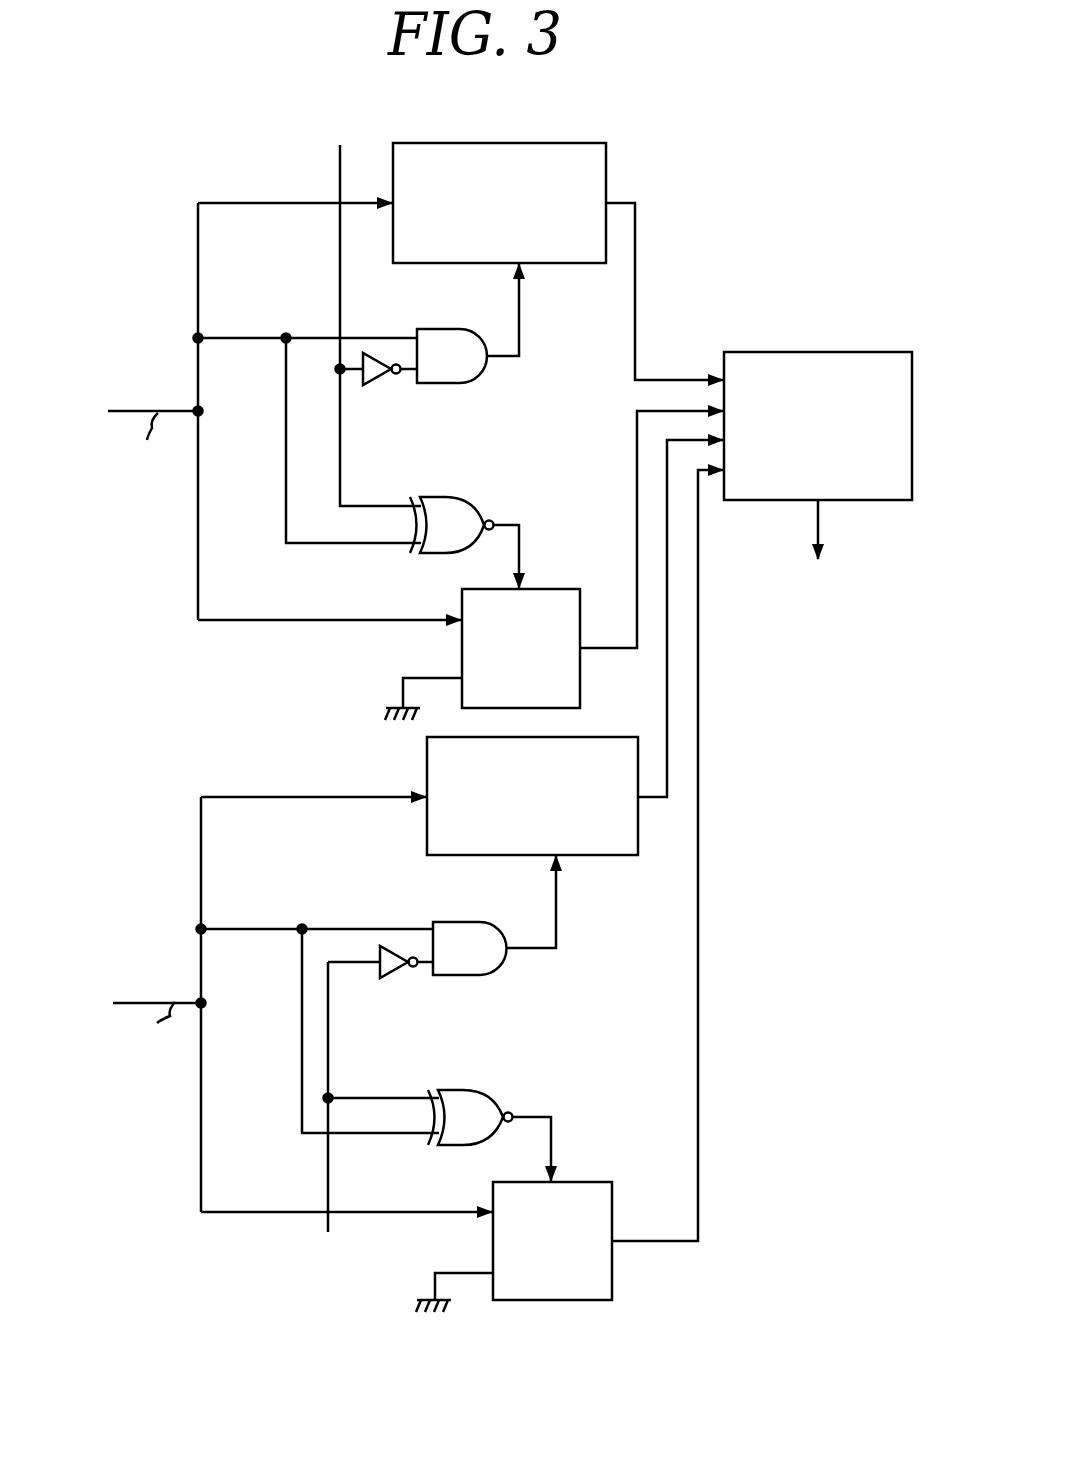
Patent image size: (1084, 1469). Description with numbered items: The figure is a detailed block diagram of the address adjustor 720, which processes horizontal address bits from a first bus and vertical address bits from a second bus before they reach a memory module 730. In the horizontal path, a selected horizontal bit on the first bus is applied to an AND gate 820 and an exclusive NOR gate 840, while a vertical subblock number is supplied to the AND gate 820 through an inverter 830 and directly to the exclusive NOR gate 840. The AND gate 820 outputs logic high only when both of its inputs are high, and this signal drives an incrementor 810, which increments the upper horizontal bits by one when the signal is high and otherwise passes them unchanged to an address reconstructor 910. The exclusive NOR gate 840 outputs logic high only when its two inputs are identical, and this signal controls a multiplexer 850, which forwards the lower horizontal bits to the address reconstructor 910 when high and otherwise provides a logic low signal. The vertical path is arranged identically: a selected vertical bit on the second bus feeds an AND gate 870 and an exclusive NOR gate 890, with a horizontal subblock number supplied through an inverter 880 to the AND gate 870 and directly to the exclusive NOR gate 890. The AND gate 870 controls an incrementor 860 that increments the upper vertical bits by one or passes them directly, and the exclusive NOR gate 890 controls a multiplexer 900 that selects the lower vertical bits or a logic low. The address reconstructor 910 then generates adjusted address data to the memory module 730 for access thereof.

The address adjustor 720 is at (793, 103).
The memory module 730 is at (831, 608).
The incrementor 810 is at (577, 143).
The AND gate 820 is at (472, 310).
The inverter 830 is at (383, 385).
The exclusive NOR gate 840 is at (460, 497).
The multiplexer 850 is at (552, 589).
The incrementor 860 is at (608, 737).
The AND gate 870 is at (492, 902).
The inverter 880 is at (400, 978).
The exclusive NOR gate 890 is at (500, 1073).
The multiplexer 900 is at (612, 1207).
The address reconstructor 910 is at (882, 352).